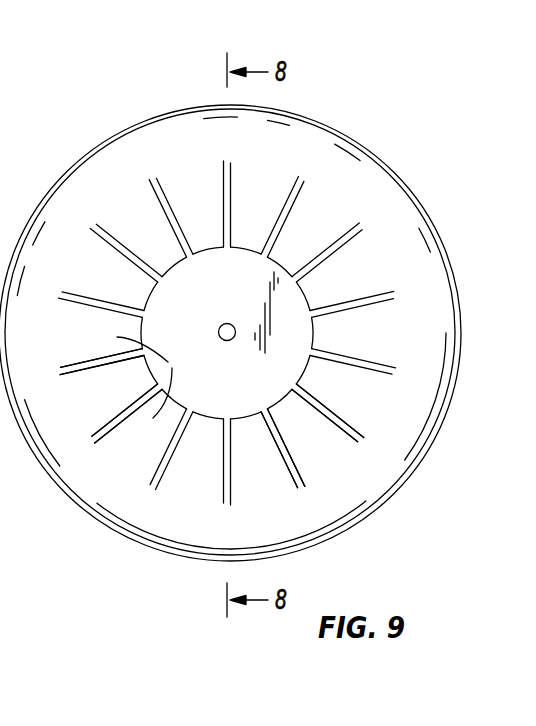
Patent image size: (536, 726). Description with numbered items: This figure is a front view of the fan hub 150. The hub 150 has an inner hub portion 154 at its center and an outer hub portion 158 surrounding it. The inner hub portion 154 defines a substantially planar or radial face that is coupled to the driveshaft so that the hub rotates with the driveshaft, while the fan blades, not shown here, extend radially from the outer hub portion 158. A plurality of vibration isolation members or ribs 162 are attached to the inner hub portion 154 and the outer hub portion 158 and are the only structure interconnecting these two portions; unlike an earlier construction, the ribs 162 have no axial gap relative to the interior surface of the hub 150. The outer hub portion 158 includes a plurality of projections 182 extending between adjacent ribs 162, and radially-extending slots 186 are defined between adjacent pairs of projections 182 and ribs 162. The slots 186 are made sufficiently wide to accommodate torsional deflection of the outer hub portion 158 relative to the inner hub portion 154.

The hub 150 is at (230, 296).
The outer hub portion 158 is at (127, 150).
The inner hub portion 154 is at (292, 338).
The ribs 162 is at (290, 210).
The slots 186 is at (117, 408).
The projections 182 is at (130, 382).